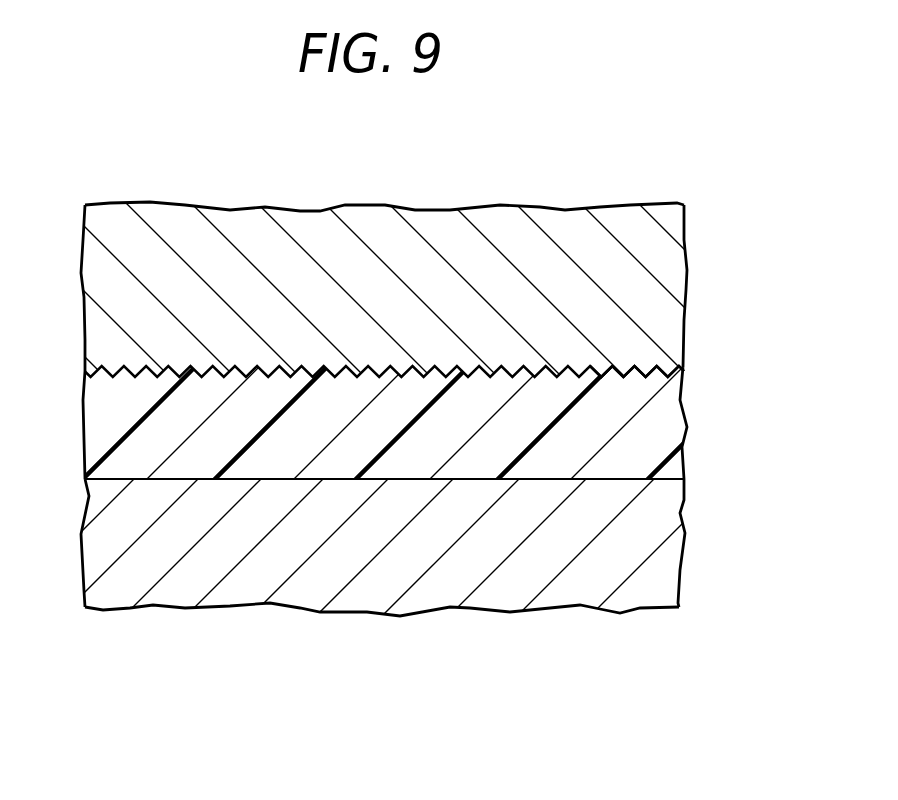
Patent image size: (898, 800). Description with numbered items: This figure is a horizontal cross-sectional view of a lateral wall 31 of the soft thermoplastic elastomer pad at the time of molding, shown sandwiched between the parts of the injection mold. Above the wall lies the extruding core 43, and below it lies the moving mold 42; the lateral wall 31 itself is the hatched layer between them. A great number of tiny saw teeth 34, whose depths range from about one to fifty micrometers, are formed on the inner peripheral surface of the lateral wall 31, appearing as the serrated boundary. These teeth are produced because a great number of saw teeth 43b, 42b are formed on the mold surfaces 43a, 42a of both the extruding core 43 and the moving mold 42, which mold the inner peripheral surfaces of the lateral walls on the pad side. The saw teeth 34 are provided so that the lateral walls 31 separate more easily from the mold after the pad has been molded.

The extruding core 43 is at (560, 222).
The moving mold 42 is at (510, 590).
The saw teeth 34 is at (612, 363).
The mold surface of the extruding core 43a is at (713, 401).
The saw teeth of the extruding core 43b is at (713, 401).
The mold surface of the moving mold 42a is at (713, 401).
The saw teeth of the moving mold 42b is at (639, 378).
The lateral wall 31 is at (100, 440).